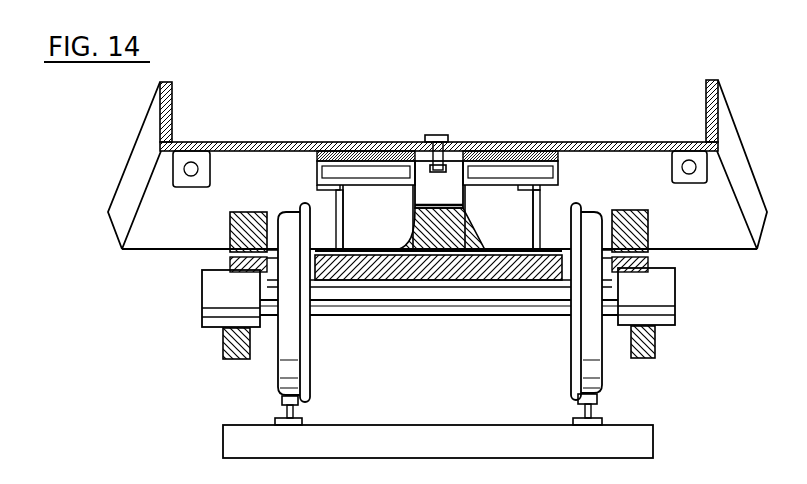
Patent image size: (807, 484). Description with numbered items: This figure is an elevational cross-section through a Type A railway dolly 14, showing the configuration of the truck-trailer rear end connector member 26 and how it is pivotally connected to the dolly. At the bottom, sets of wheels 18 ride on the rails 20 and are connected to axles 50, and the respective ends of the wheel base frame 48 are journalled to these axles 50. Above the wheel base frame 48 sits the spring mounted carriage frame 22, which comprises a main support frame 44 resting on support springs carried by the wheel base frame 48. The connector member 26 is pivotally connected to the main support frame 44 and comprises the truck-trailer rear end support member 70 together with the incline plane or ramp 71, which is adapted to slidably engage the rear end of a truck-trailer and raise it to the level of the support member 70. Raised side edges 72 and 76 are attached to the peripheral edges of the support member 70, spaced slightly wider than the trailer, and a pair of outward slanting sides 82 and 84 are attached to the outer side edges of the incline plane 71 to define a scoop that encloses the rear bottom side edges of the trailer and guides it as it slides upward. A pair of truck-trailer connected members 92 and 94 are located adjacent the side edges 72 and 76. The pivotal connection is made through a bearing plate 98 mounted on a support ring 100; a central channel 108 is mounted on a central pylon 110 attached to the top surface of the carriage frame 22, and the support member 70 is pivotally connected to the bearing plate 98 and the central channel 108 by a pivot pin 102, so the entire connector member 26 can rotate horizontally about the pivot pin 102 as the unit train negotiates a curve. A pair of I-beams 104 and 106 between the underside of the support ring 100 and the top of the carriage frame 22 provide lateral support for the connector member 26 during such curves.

The railway dolly 14 is at (347, 68).
The wheels 18 is at (311, 372).
The rail 20 is at (281, 402).
The spring mounted carriage frame 22 is at (373, 250).
The truck-trailer rear wheel connector member 26 is at (398, 138).
The main support frame 44 is at (230, 222).
The wheel base frame 48 is at (222, 345).
The axles 50 is at (475, 315).
The truck-trailer rear end support member 70 is at (306, 142).
The incline plane or ramp 71 is at (172, 255).
The raised side edge 72 is at (172, 98).
The raised side edge 76 is at (707, 86).
The outward slanting side 82 is at (108, 212).
The outward slanting side 84 is at (767, 210).
The truck-trailer connected member 92 is at (671, 168).
The truck-trailer connected member 94 is at (212, 166).
The bearing plate 98 is at (535, 150).
The support ring 100 is at (562, 166).
The pivot pin 102 is at (440, 137).
The I-beam 104 is at (545, 200).
The I-beam 106 is at (335, 205).
The central channel 108 is at (412, 196).
The central pylon 110 is at (468, 232).